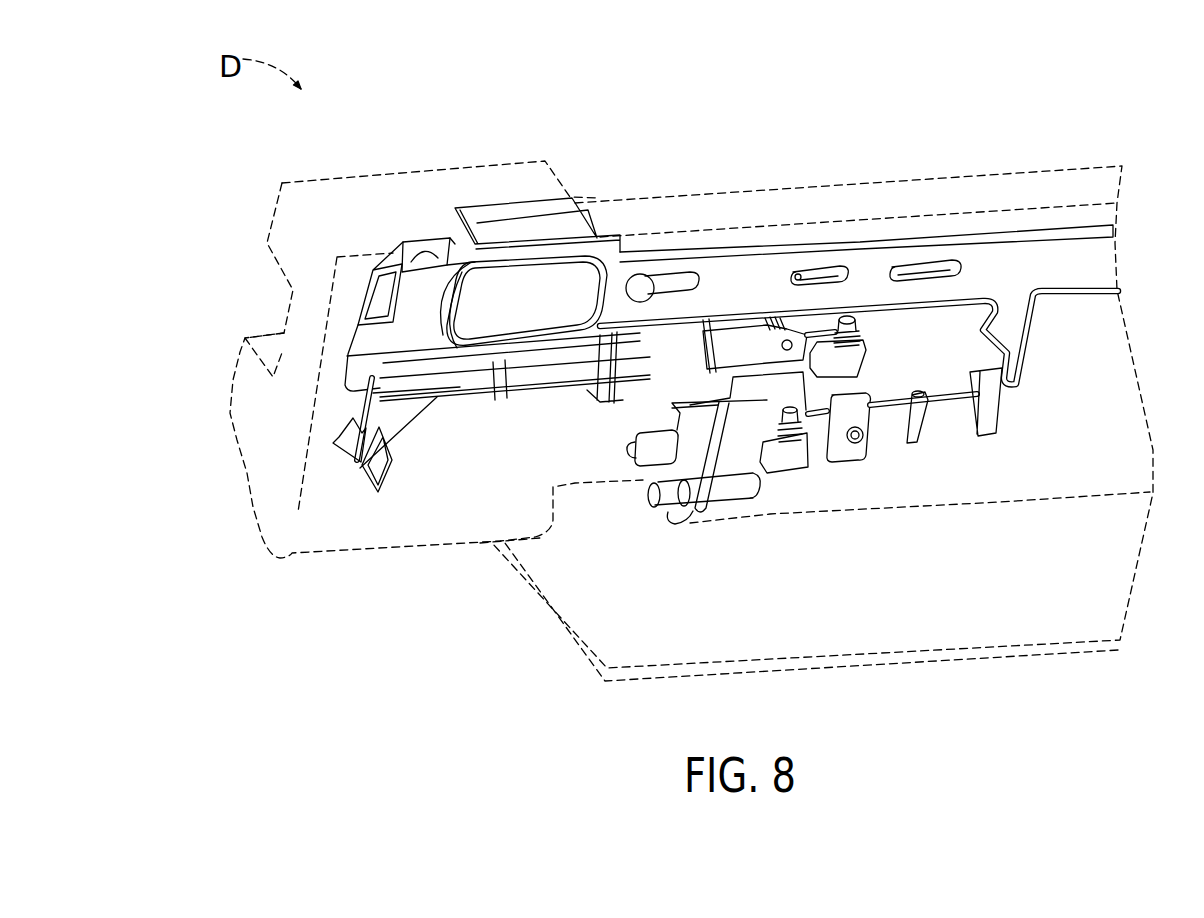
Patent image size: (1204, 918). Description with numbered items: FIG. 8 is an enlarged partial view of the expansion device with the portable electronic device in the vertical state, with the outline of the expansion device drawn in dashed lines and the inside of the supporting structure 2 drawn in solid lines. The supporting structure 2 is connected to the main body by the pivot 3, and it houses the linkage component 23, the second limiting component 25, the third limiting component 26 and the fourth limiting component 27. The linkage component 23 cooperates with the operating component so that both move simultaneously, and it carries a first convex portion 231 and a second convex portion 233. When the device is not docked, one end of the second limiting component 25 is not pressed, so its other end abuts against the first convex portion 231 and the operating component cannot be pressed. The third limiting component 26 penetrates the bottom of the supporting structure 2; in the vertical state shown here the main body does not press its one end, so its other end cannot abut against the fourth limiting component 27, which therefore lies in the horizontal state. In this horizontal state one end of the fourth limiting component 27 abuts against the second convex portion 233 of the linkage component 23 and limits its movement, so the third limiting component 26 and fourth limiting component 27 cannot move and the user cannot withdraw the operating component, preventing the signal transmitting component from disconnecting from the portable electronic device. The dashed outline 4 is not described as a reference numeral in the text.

The supporting structure 2 is at (603, 200).
The pivot 3 is at (637, 453).
The housing 4 is at (323, 183).
The linkage component 23 is at (867, 273).
The second limiting component 25 is at (697, 343).
The third limiting component 26 is at (857, 437).
The fourth limiting component 27 is at (948, 413).
The first convex portion 231 is at (623, 405).
The second convex portion 233 is at (1015, 342).